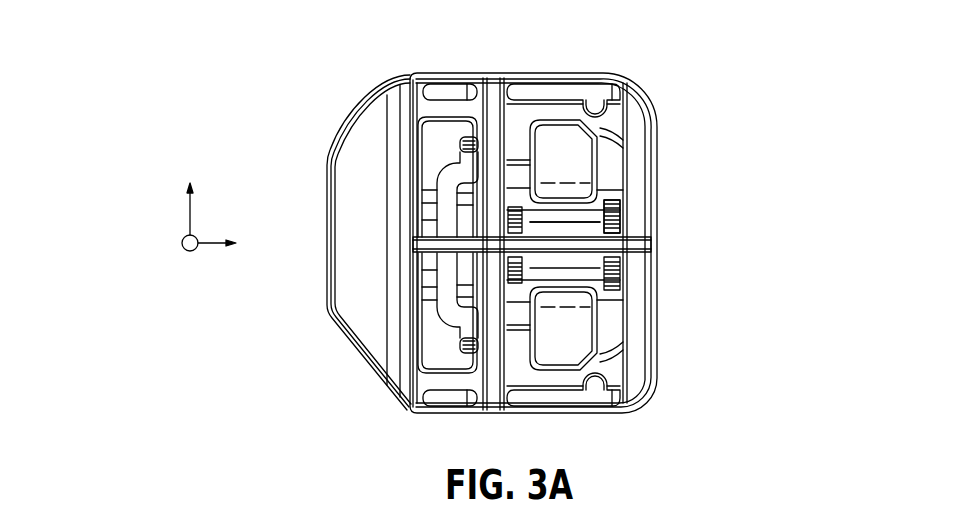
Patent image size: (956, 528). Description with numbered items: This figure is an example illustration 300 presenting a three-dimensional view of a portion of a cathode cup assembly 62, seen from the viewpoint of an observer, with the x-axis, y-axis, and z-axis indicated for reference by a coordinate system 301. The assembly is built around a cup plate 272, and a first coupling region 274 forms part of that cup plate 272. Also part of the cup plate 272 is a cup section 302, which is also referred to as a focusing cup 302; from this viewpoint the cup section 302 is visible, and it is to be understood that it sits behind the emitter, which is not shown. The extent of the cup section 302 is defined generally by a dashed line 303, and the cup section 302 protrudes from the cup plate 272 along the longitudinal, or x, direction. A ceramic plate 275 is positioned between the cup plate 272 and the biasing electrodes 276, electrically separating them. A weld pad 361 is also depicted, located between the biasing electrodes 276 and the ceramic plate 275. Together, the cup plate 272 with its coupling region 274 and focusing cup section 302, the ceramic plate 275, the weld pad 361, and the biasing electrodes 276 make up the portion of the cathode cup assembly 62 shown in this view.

The cathode cup assembly 62 is at (504, 228).
The cup plate 272 is at (610, 134).
The first coupling region 274 is at (375, 131).
The ceramic plate 275 is at (420, 383).
The biasing electrodes 276 is at (632, 330).
The example illustration 300 is at (561, 228).
The coordinate system 301 is at (226, 150).
The cup section 302 is at (587, 222).
The dashed line 303 is at (650, 248).
The weld pad 361 is at (620, 190).